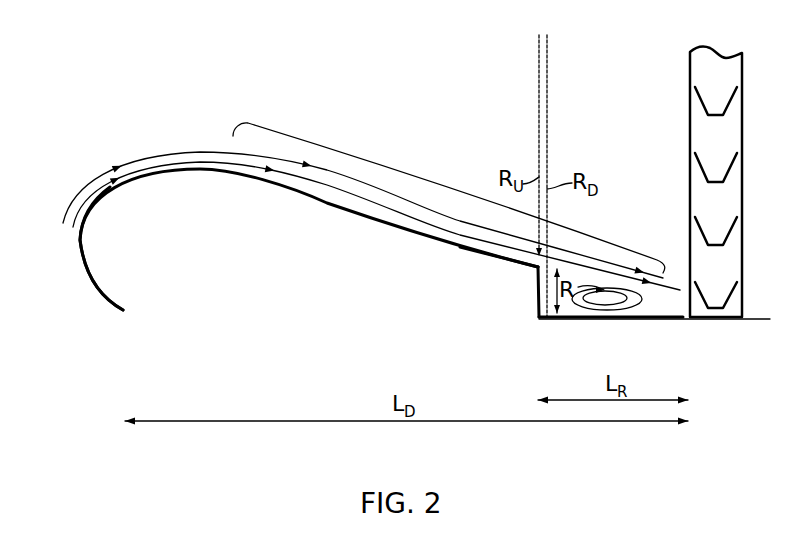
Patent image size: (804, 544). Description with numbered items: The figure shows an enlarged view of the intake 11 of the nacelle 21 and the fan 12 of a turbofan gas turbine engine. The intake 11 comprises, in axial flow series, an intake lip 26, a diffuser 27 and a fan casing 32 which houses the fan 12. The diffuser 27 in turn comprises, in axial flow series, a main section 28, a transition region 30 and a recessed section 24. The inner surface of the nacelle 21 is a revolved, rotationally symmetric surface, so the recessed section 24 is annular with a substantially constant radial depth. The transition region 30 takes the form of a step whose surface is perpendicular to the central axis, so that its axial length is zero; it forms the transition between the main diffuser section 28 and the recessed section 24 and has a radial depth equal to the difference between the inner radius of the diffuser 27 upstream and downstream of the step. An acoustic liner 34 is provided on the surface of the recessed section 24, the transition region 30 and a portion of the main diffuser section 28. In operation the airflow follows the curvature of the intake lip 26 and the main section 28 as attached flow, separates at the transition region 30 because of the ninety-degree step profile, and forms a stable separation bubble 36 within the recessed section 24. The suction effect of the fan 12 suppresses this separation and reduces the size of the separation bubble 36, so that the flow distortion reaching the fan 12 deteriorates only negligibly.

The intake 11 is at (338, 130).
The fan 12 is at (713, 147).
The nacelle 21 is at (187, 291).
The recessed section 24 is at (604, 320).
The intake lip 26 is at (80, 243).
The diffuser 27 is at (456, 186).
The main section 28 is at (337, 198).
The transition region 30 is at (537, 296).
The fan casing 32 is at (706, 320).
The acoustic liner 34 is at (513, 266).
The separation bubble 36 is at (638, 310).